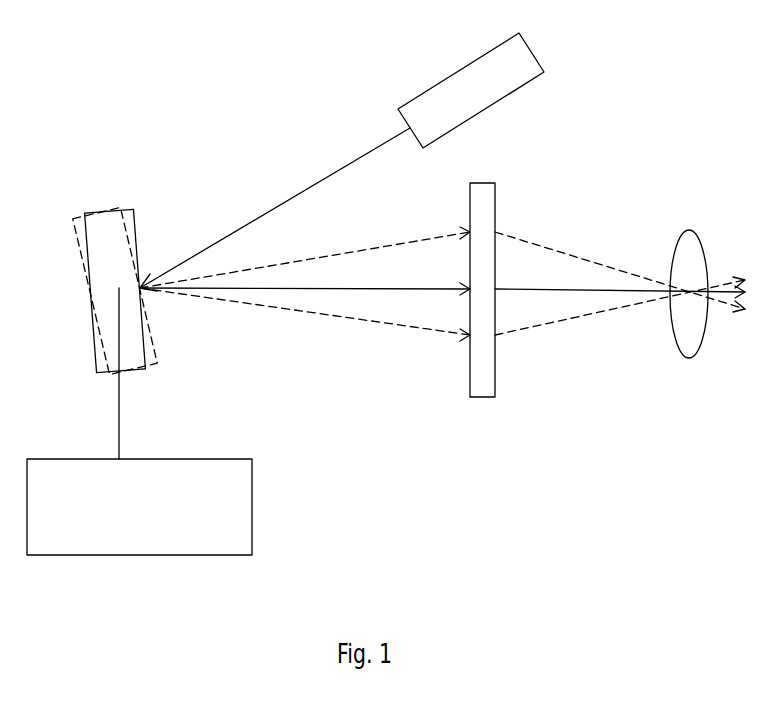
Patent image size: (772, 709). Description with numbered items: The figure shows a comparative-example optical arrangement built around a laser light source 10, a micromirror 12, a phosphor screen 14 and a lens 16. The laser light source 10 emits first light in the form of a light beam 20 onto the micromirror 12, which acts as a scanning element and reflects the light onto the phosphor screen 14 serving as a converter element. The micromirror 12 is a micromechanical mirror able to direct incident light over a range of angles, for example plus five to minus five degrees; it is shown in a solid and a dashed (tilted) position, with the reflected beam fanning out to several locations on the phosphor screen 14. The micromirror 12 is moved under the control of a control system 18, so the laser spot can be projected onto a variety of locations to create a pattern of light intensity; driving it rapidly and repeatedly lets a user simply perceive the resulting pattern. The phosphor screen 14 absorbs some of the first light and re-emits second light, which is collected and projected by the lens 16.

The laser light source 10 is at (448, 103).
The micromirror 12 is at (110, 274).
The phosphor screen 14 is at (482, 388).
The lens 16 is at (690, 330).
The control system 18 is at (122, 523).
The light beam 20 is at (253, 222).